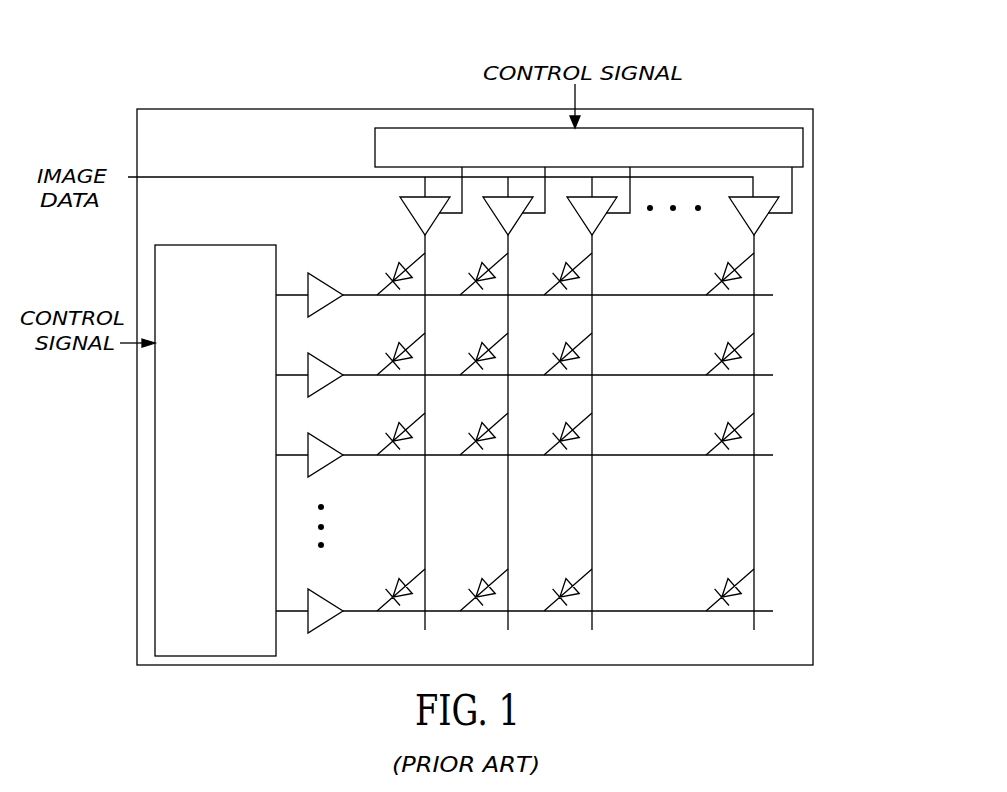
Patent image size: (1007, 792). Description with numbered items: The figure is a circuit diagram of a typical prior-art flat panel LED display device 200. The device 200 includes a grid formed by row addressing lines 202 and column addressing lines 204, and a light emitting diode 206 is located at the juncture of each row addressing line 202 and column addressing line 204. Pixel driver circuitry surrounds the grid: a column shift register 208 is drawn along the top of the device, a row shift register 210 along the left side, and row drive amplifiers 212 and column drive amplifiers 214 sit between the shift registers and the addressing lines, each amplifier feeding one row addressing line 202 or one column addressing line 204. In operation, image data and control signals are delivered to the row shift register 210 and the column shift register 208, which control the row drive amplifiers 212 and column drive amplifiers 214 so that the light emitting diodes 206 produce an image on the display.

The LED display device 200 is at (185, 96).
The row addressing lines 202 is at (773, 295).
The column addressing lines 204 is at (593, 637).
The light emitting diode 206 is at (742, 443).
The column shift register 208 is at (803, 131).
The row shift register 210 is at (155, 478).
The row drive amplifiers 212 is at (325, 280).
The column drive amplifiers 214 is at (618, 198).